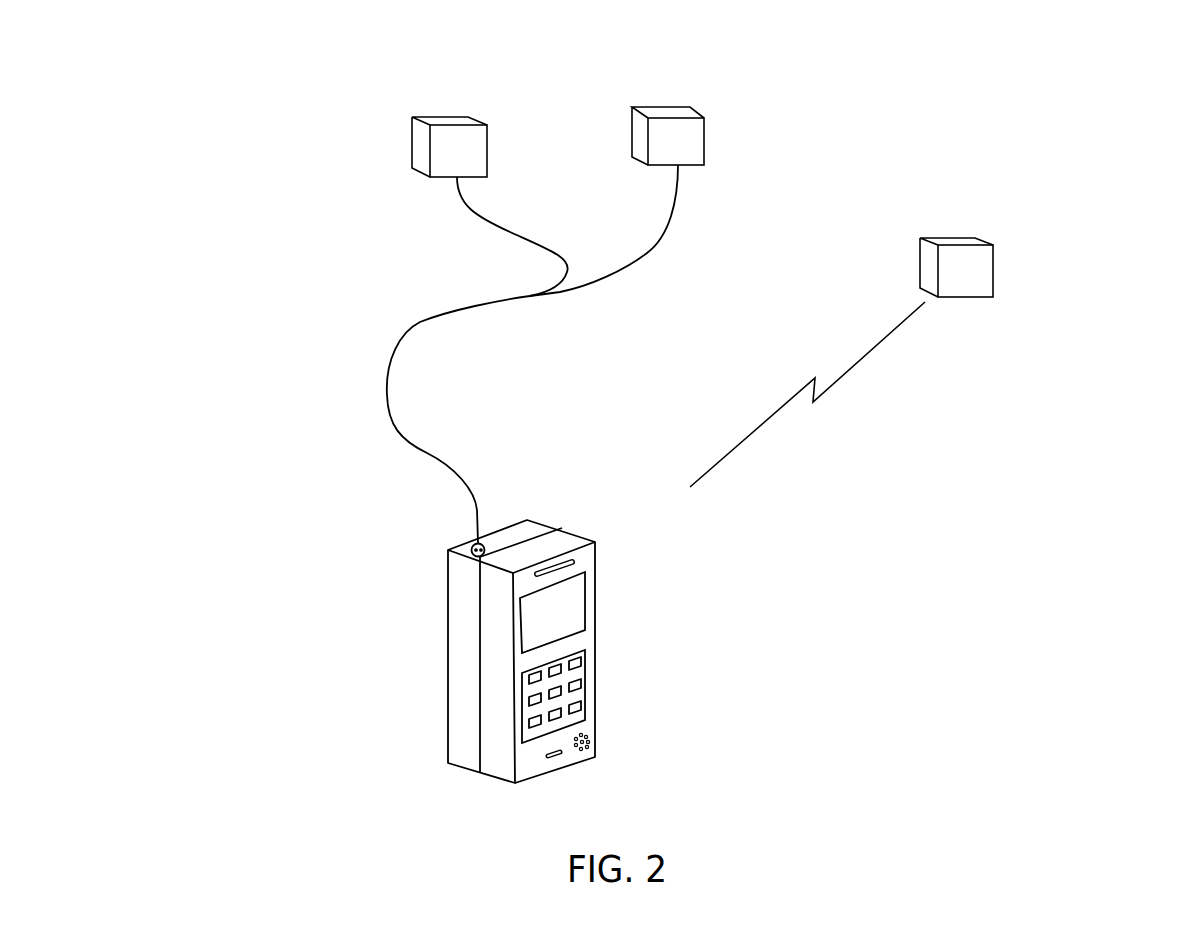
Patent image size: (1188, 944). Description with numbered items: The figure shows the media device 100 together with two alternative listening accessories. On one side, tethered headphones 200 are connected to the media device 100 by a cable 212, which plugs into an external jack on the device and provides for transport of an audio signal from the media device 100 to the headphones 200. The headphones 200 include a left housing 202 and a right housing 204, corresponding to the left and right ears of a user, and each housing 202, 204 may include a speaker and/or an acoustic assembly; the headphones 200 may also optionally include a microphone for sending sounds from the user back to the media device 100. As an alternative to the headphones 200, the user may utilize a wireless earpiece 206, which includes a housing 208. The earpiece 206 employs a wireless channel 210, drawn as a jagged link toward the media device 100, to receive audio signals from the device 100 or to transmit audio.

The media device 100 is at (458, 673).
The tethered headphones 200 is at (300, 98).
The left housing 202 is at (487, 147).
The right housing 204 is at (704, 135).
The wireless earpiece 206 is at (1058, 215).
The housing 208 is at (993, 270).
The wireless channel 210 is at (847, 373).
The cable 212 is at (402, 335).